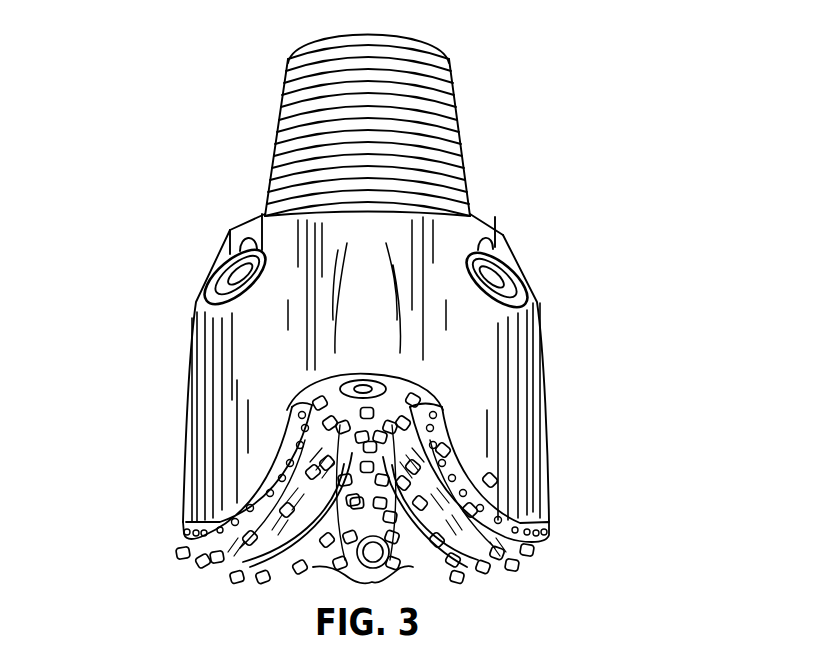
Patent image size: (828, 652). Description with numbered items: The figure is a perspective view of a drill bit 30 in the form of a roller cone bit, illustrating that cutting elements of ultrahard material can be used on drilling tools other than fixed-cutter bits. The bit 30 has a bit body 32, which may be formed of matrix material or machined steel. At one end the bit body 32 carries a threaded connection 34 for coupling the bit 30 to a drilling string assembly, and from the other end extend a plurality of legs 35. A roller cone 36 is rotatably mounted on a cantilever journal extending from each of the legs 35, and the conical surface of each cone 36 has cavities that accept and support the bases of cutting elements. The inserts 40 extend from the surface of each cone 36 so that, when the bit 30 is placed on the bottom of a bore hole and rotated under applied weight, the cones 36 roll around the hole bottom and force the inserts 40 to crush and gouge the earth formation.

The drill bit 30 is at (498, 195).
The bit body 32 is at (450, 313).
The threaded connection 34 is at (442, 105).
The legs 35 is at (212, 433).
The roller cones 36 is at (262, 494).
The inserts 40 is at (200, 556).